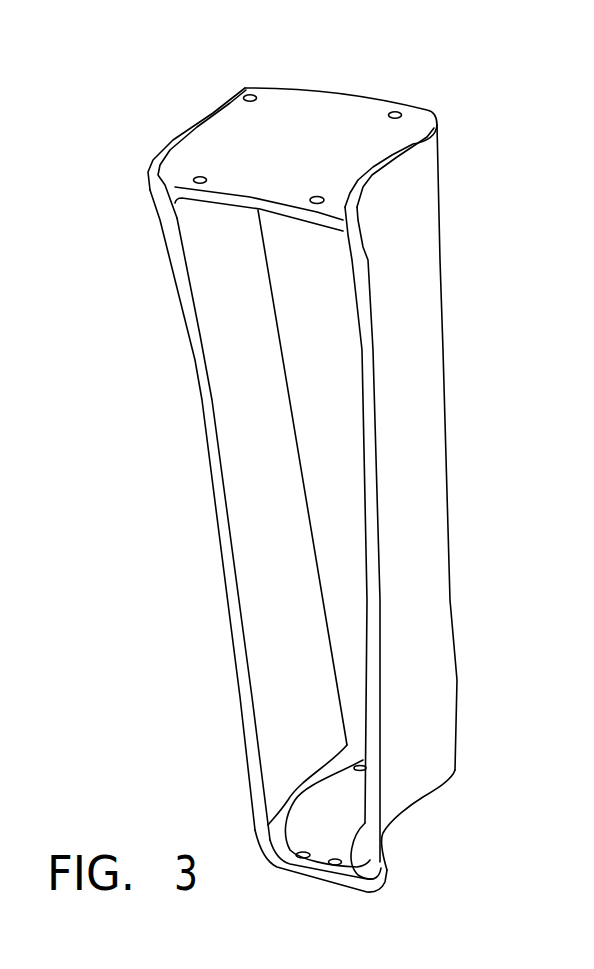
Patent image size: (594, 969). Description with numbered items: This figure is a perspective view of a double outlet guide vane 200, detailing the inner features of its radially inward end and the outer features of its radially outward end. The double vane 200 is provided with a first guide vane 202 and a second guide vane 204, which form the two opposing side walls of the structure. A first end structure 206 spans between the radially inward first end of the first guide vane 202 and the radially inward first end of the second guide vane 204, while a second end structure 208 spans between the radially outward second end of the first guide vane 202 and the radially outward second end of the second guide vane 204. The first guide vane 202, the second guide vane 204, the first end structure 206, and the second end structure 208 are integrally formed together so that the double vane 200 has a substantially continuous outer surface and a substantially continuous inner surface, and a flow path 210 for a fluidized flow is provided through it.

The double outlet guide vane 200 is at (178, 375).
The first guide vane 202 is at (216, 507).
The second guide vane 204 is at (447, 450).
The first end structure 206 is at (317, 860).
The second end structure 208 is at (343, 115).
The flow path 210 is at (334, 287).